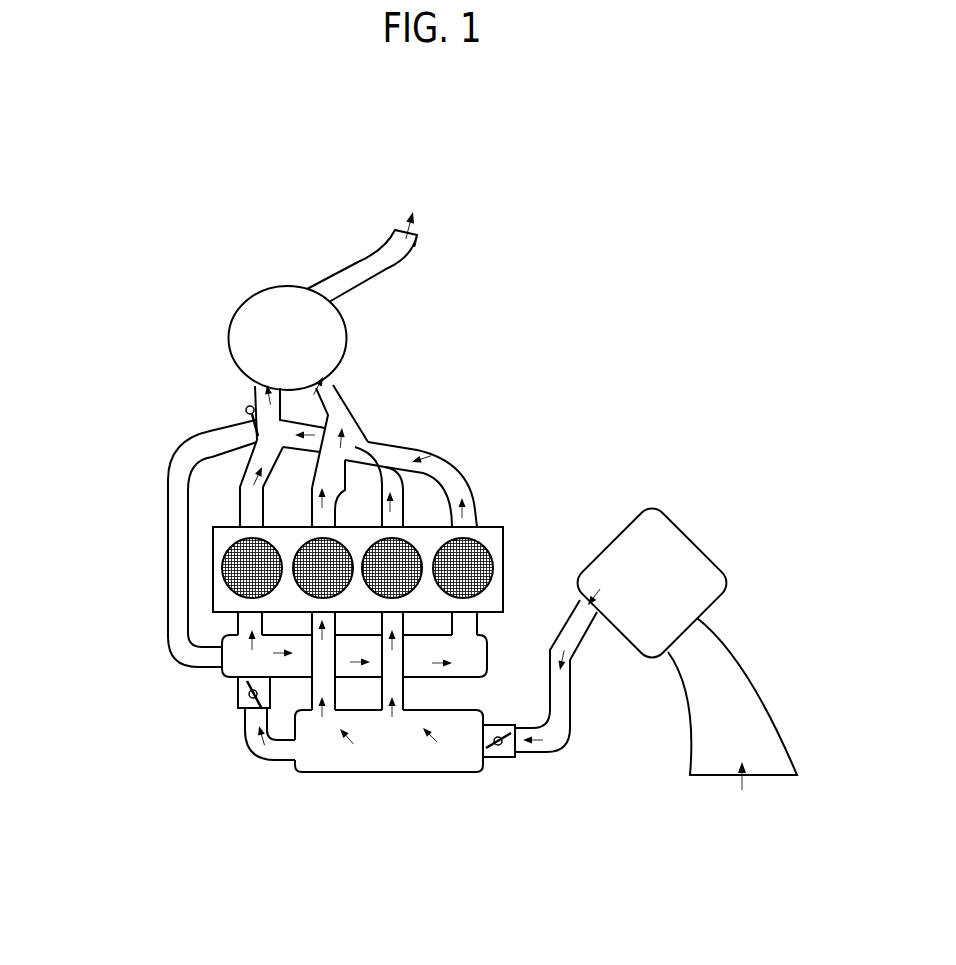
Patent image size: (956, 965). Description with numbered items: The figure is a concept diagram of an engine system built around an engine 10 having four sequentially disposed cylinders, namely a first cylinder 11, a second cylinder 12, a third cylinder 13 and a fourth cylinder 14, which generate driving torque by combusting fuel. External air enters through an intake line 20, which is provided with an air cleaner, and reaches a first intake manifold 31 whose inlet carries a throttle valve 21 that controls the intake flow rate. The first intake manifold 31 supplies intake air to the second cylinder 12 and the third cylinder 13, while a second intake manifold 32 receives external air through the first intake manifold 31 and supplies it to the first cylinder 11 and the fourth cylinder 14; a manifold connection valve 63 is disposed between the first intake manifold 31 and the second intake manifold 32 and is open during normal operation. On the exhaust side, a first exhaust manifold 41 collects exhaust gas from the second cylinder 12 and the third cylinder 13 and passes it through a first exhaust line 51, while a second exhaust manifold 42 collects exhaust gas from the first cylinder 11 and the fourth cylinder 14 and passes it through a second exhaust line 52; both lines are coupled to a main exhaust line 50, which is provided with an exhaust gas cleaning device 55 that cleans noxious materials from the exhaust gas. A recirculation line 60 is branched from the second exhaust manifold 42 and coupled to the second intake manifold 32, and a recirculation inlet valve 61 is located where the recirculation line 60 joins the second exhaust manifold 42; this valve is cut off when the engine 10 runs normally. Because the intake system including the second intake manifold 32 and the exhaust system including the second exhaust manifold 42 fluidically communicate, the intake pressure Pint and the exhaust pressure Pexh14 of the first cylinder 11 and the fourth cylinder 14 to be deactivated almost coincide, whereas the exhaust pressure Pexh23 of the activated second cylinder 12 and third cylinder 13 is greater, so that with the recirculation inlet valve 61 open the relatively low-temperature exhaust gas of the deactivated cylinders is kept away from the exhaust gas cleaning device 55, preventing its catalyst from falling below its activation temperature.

The engine 10 is at (190, 575).
The first cylinder 11 is at (223, 555).
The second cylinder 12 is at (302, 590).
The third cylinder 13 is at (410, 592).
The fourth cylinder 14 is at (488, 550).
The intake line 20 is at (558, 742).
The throttle valve 21 is at (495, 758).
The first intake manifold 31 is at (340, 772).
The second intake manifold 32 is at (222, 677).
The first exhaust manifold 41 is at (336, 517).
The second exhaust manifold 42 is at (243, 512).
The main exhaust line 50 is at (345, 268).
The first exhaust line 51 is at (340, 400).
The second exhaust line 52 is at (255, 389).
The exhaust gas cleaning device 55 is at (240, 307).
The recirculation line 60 is at (182, 472).
The recirculation inlet valve 61 is at (247, 421).
The manifold connection valve 63 is at (237, 707).
The exhaust pressure of the second and third cylinders Pexh23 is at (238, 330).
The exhaust pressure of the first and fourth cylinders Pexh14 is at (257, 400).
The intake pressure Pint is at (228, 657).